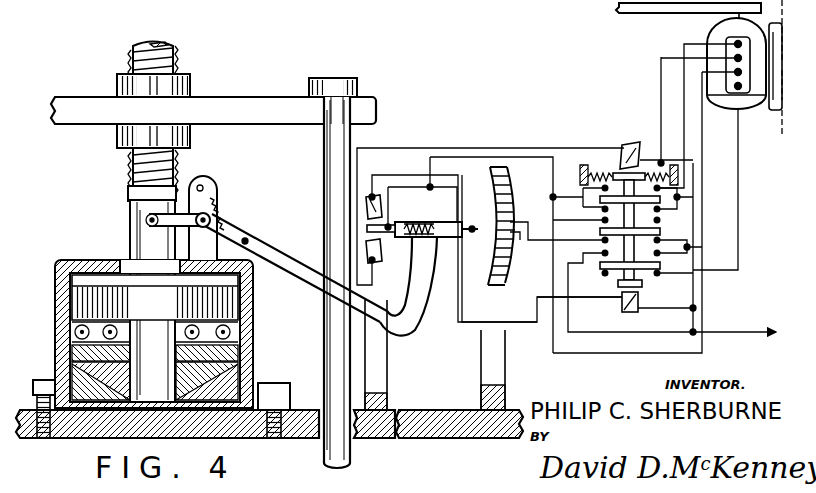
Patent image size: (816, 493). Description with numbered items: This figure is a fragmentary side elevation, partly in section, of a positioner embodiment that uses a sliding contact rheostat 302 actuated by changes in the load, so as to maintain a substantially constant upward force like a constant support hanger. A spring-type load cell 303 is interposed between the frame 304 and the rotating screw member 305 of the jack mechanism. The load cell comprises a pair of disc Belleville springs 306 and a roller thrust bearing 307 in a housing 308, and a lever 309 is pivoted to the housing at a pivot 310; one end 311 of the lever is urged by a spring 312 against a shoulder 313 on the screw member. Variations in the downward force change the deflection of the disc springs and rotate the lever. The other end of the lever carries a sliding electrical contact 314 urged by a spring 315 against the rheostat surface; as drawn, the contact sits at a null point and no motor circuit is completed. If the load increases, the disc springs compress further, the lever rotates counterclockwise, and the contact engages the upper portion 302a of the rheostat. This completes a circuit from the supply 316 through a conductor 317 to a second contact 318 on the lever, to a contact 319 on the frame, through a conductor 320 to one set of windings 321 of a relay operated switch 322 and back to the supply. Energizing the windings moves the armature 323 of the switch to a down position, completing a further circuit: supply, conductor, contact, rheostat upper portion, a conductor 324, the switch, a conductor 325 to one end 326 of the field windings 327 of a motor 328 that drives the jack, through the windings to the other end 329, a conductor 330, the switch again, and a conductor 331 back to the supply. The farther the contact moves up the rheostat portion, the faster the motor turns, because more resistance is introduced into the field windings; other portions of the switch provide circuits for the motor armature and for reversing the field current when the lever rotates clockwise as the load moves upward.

The sliding contact rheostat 302 is at (532, 211).
The upper portion of the rheostat 302a is at (503, 170).
The spring-type load cell 303 is at (62, 246).
The frame 304 is at (306, 410).
The rotating screw member 305 is at (160, 65).
The disc Belleville springs 306 is at (45, 380).
The roller thrust bearing 307 is at (103, 312).
The housing 308 is at (258, 350).
The lever 309 is at (263, 255).
The pivot 310 is at (214, 206).
The one end of the lever 311 is at (130, 205).
The spring 312 is at (222, 214).
The shoulder 313 is at (142, 222).
The sliding electrical contact 314 is at (450, 240).
The spring 315 is at (445, 222).
The supply 316 is at (676, 304).
The conductor 317 is at (606, 353).
The second contact 318 is at (388, 232).
The contact 319 is at (382, 158).
The conductor 320 is at (520, 322).
The windings 321 is at (622, 302).
The relay operated switch 322 is at (648, 280).
The armature 323 is at (638, 218).
The conductor 324 is at (543, 240).
The conductor 325 is at (702, 190).
The one end of the field windings 326 is at (764, 100).
The field windings 327 is at (735, 88).
The motor 328 is at (715, 30).
The other end of the field windings 329 is at (738, 90).
The conductor 330 is at (738, 268).
The conductor 331 is at (662, 332).